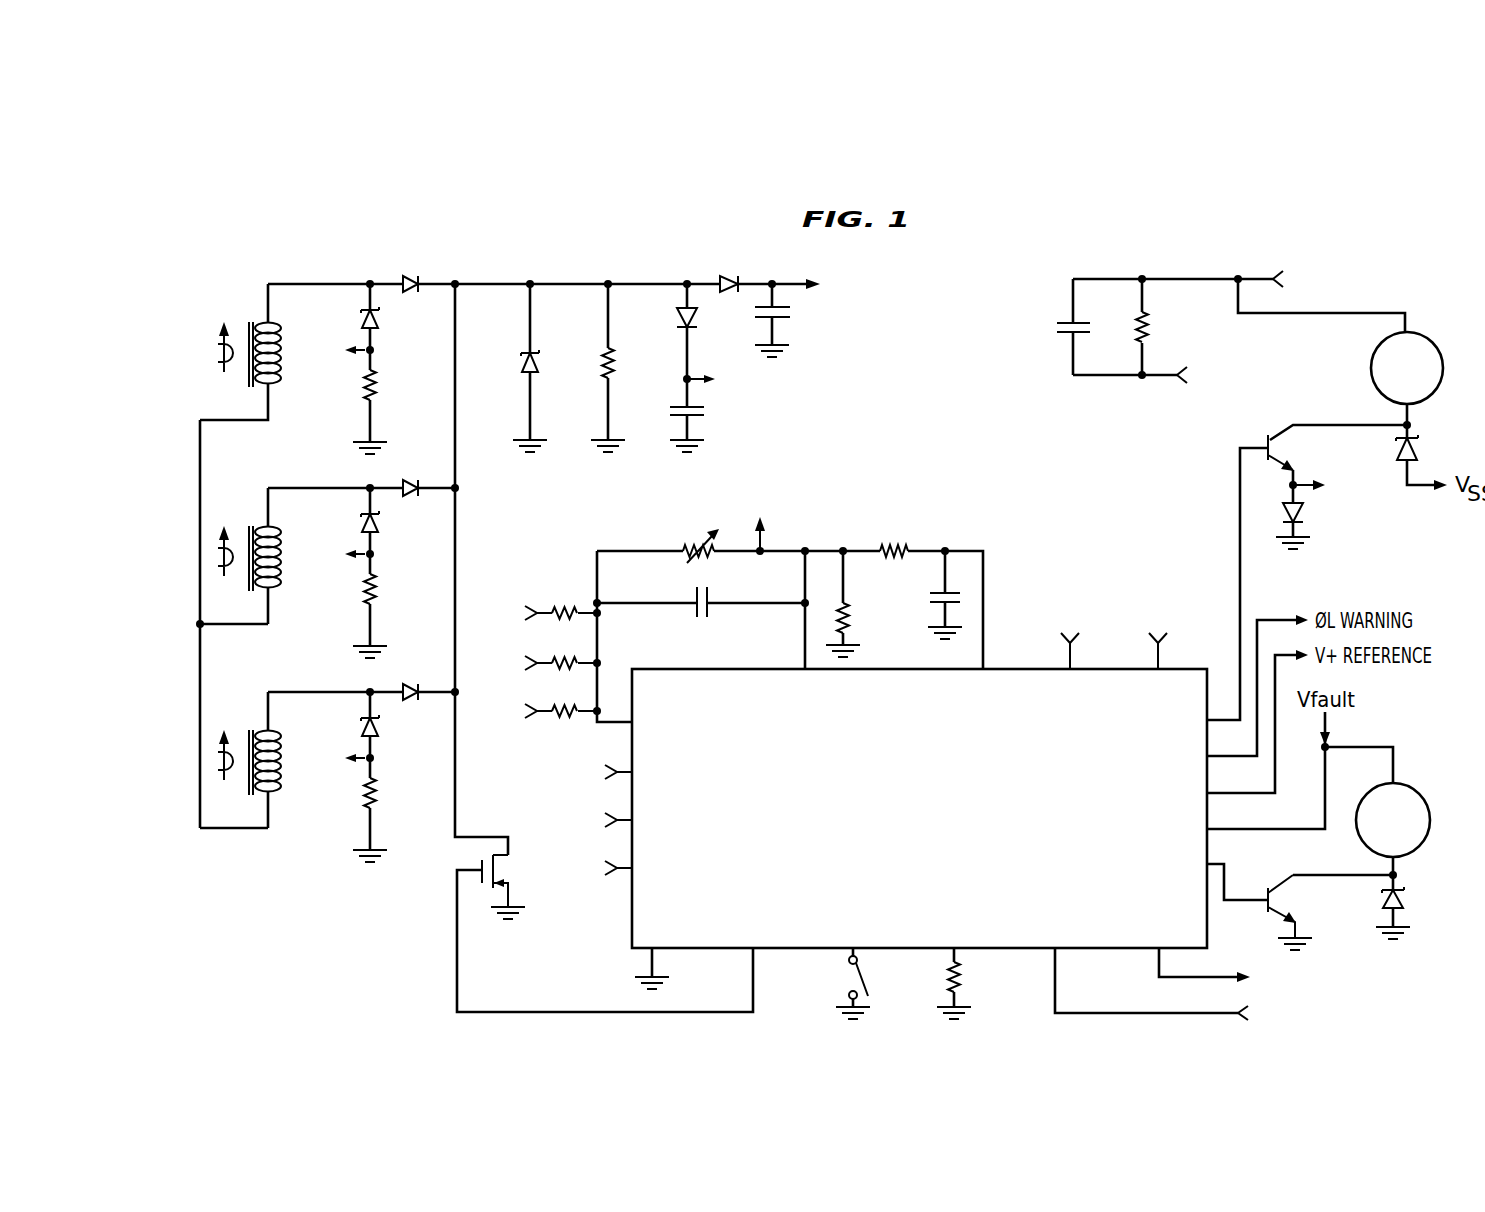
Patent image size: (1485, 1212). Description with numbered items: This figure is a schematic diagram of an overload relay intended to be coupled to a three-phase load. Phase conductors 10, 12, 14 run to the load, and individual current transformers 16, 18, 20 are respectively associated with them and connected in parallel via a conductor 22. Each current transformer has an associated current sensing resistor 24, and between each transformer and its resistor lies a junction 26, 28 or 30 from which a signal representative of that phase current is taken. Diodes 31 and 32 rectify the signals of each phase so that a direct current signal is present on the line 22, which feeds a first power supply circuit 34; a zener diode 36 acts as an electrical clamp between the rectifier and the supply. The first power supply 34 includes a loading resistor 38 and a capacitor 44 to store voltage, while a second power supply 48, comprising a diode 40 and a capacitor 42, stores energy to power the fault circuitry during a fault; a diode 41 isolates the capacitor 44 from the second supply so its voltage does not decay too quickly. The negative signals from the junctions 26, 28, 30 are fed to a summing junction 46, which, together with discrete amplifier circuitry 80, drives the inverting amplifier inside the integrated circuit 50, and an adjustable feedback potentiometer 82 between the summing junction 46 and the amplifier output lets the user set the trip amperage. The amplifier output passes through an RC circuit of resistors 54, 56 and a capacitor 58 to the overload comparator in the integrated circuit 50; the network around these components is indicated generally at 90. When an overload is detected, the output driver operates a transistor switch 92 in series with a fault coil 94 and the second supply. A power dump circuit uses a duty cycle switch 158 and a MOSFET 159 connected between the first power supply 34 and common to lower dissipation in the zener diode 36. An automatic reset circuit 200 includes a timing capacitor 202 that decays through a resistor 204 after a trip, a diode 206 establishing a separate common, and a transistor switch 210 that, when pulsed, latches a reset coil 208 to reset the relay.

The phase conductor 10 is at (219, 352).
The phase conductor 12 is at (219, 556).
The phase conductor 14 is at (219, 760).
The current transformer 16 is at (251, 330).
The current transformer 18 is at (251, 534).
The current transformer 20 is at (251, 738).
The conductor 22 is at (457, 304).
The current sensing resistor 24 is at (365, 385).
The junction 26 is at (375, 352).
The junction 28 is at (375, 556).
The junction 30 is at (375, 760).
The diode 31 is at (377, 319).
The diode 32 is at (410, 274).
The first power supply circuit 34 is at (698, 250).
The zener diode 36 is at (540, 369).
The loading resistor 38 is at (616, 366).
The diode 40 is at (680, 321).
The diode 41 is at (728, 274).
The capacitor 42 is at (707, 416).
The capacitor 44 is at (792, 318).
The summing junction 46 is at (600, 616).
The second power supply 48 is at (689, 356).
The integrated circuit 50 is at (777, 809).
The resistor 54 is at (851, 615).
The resistor 56 is at (887, 545).
The capacitor 58 is at (934, 597).
The discrete amplifier circuitry 80 is at (620, 525).
The potentiometer 82 is at (691, 544).
The overload delay network 90 is at (965, 523).
The transistor switch 92 is at (1280, 898).
The fault coil 94 is at (1410, 788).
The duty cycle switch 158 is at (855, 975).
The MOSFET 159 is at (510, 880).
The automatic reset circuit 200 is at (1165, 248).
The capacitor 202 is at (1058, 328).
The resistor 204 is at (1155, 328).
The diode 206 is at (1304, 515).
The reset coil 208 is at (1428, 340).
The transistor switch 210 is at (1299, 445).